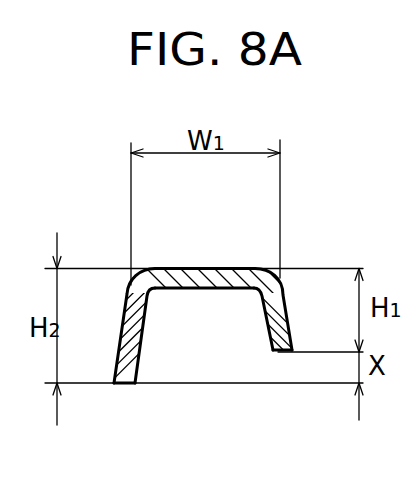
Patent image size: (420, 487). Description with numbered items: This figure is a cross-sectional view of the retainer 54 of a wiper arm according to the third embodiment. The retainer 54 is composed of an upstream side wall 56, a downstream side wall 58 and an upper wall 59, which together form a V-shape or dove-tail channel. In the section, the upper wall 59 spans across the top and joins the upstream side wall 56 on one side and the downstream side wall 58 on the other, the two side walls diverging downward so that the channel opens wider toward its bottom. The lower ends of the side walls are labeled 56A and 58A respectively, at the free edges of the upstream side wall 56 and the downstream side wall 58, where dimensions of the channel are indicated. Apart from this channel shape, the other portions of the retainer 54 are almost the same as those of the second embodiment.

The retainer 54 is at (192, 252).
The upper wall 59 is at (228, 267).
The upstream side wall 56 is at (123, 327).
The downstream side wall 58 is at (289, 322).
The lower end of left side wall 56A is at (117, 384).
The lower end of right side wall 58A is at (275, 352).